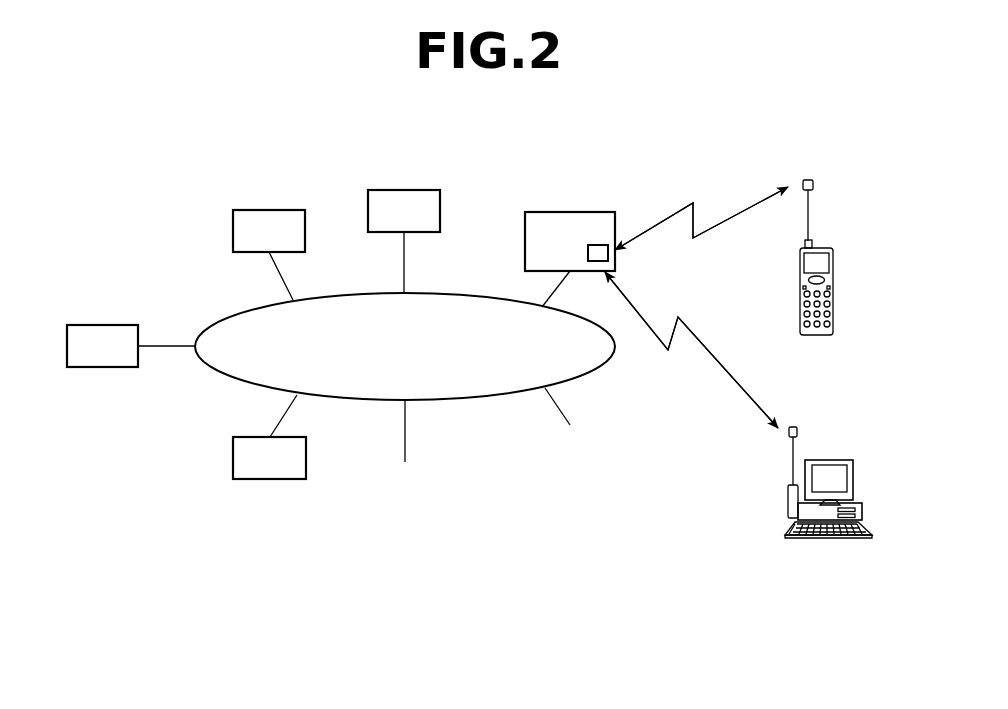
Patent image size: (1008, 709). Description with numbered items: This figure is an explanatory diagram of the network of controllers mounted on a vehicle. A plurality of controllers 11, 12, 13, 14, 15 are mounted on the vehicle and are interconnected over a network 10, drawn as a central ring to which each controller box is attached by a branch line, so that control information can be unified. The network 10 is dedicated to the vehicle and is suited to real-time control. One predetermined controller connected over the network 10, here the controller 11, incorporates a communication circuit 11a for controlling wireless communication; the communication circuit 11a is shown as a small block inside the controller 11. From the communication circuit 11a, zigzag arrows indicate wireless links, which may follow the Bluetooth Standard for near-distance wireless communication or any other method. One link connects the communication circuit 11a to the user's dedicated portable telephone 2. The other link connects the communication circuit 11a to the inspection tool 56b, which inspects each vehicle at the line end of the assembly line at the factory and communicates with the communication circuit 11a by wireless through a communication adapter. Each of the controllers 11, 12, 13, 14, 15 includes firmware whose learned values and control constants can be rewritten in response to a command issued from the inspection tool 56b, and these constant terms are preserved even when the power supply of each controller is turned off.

The network 10 is at (493, 400).
The controller 11 is at (550, 212).
The communication circuit 11a is at (597, 245).
The controller 12 is at (418, 190).
The controller 13 is at (277, 210).
The controller 14 is at (108, 367).
The controller 15 is at (281, 479).
The portable telephone 2 is at (833, 270).
The inspection tool 56b is at (826, 540).